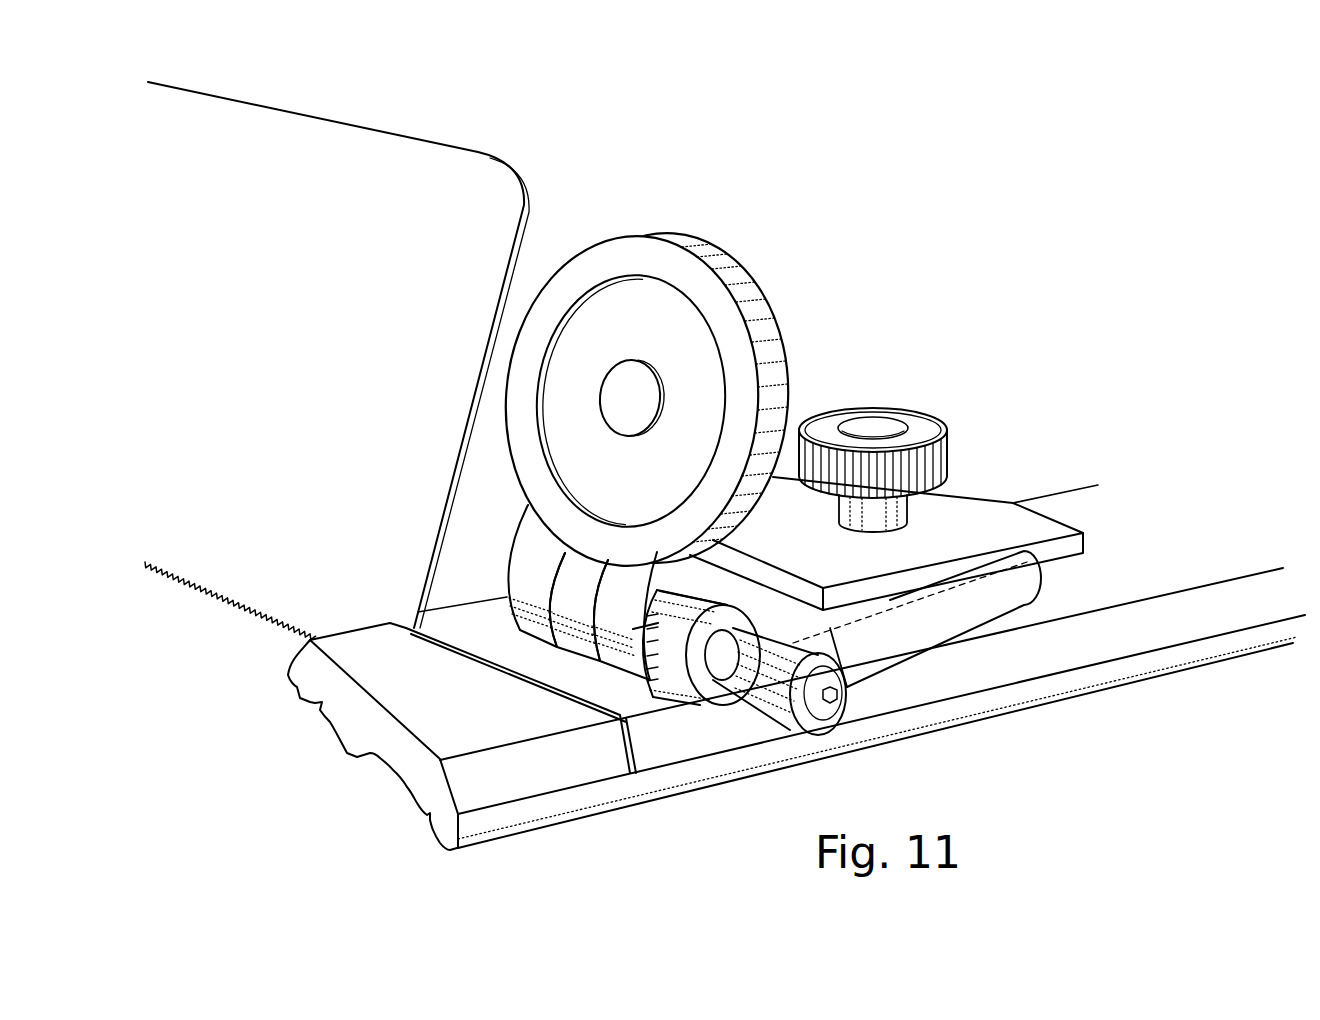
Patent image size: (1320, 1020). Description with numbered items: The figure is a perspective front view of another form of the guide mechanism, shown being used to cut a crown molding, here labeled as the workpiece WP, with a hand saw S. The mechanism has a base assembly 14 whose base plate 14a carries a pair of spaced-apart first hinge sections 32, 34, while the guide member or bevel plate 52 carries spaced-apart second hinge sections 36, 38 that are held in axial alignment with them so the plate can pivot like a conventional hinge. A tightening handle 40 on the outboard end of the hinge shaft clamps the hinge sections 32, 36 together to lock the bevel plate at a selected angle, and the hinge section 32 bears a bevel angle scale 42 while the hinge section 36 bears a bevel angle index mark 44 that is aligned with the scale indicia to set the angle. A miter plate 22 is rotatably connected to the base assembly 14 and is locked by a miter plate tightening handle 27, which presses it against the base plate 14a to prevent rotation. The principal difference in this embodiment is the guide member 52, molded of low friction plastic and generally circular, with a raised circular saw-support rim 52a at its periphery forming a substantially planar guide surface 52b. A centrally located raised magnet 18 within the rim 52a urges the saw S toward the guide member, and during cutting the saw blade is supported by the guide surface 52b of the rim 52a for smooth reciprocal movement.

The saw S is at (353, 300).
The workpiece WP is at (355, 727).
The base assembly 14 is at (823, 619).
The base plate 14a is at (884, 662).
The magnet 18 is at (620, 380).
The miter plate 22 is at (967, 497).
The miter plate tightening handle 27 is at (913, 417).
The first hinge section 32 is at (697, 600).
The first hinge section 34 is at (573, 615).
The second hinge section 36 is at (617, 633).
The second hinge section 38 is at (527, 597).
The tightening handle 40 is at (970, 613).
The bevel angle scale 42 is at (663, 690).
The bevel angle index mark 44 is at (633, 629).
The guide member 52 is at (773, 353).
The saw-support rim 52a is at (737, 410).
The guide surface 52b is at (685, 262).